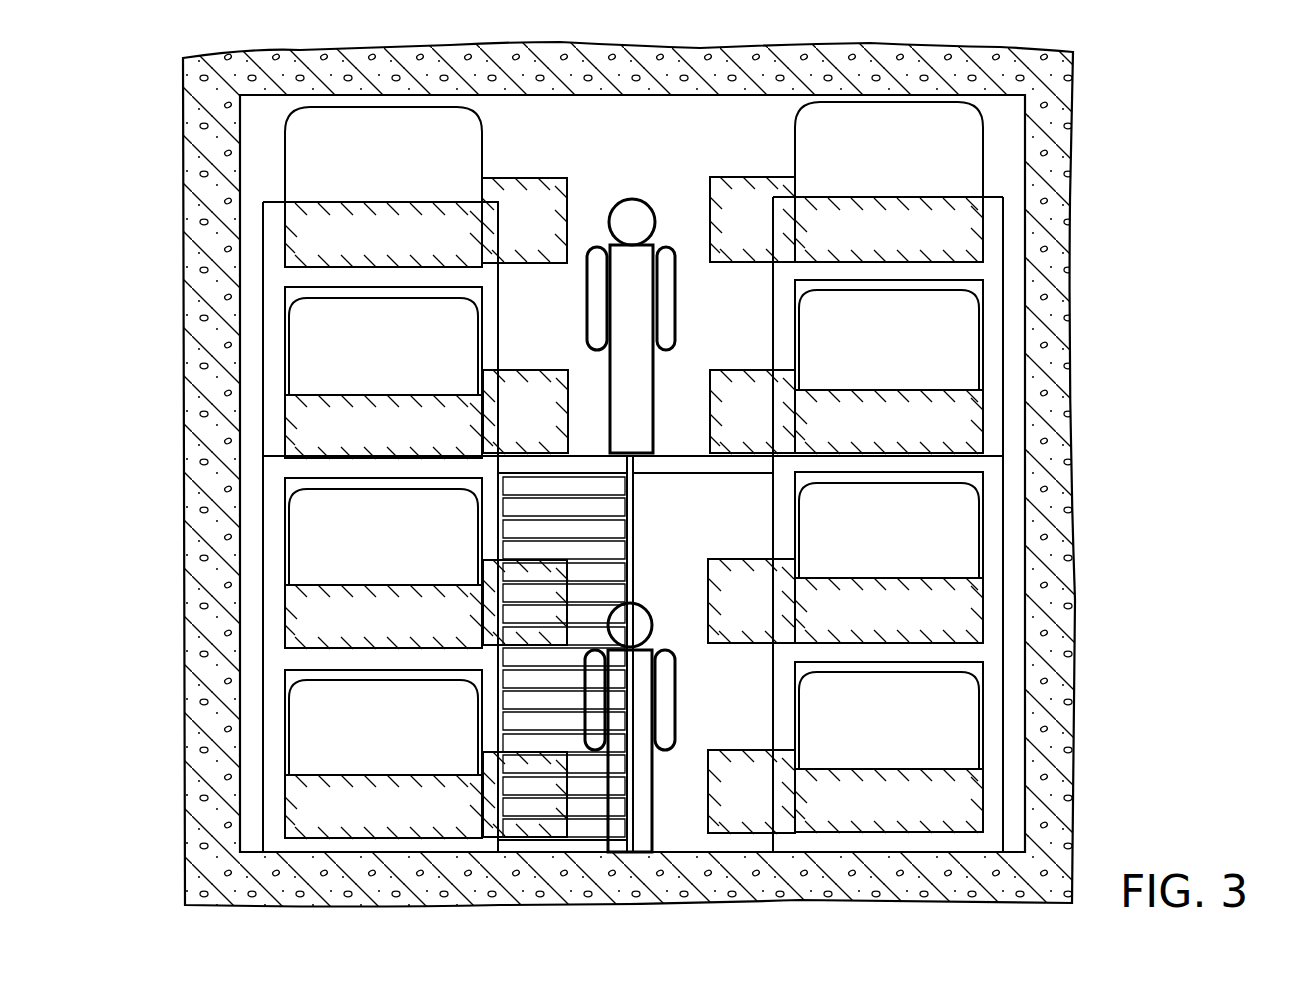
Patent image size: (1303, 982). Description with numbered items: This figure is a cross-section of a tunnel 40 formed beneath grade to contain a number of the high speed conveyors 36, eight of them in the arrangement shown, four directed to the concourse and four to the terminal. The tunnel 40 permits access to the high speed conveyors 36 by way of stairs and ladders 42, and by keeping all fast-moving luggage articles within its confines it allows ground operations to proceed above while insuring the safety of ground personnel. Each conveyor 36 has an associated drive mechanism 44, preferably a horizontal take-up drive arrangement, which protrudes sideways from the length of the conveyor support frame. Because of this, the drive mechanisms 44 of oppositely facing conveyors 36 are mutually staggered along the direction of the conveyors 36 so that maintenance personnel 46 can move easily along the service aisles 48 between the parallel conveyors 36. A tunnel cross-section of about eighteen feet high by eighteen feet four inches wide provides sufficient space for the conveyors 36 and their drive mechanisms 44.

The high speed conveyor 36 is at (634, 470).
The tunnel 40 is at (240, 265).
The stairs and ladders 42 is at (635, 520).
The drive mechanism 44 is at (638, 507).
The maintenance personnel 46 is at (657, 375).
The service aisle 48 is at (680, 453).